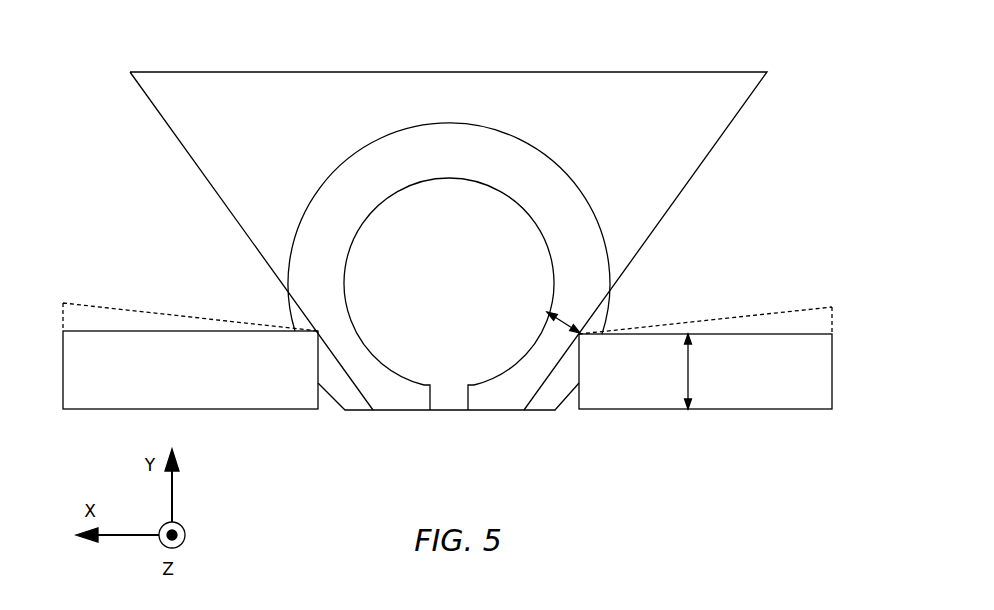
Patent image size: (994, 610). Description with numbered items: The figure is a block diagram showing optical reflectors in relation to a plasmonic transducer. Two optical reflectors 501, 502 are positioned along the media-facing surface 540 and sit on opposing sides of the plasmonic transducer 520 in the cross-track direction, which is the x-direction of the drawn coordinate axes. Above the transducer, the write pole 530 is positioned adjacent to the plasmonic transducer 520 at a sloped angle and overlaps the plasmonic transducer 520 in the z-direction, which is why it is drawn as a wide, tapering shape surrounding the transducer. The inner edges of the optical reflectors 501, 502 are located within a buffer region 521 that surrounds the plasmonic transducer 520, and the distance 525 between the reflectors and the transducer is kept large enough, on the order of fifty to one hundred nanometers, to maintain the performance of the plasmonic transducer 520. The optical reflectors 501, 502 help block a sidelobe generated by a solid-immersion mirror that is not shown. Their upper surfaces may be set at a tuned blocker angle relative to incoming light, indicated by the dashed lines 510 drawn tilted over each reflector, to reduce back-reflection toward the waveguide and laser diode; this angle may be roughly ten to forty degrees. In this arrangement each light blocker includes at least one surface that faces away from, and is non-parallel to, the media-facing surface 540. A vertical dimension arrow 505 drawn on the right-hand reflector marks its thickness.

The write pole 530 is at (666, 78).
The buffer region 521 is at (565, 178).
The plasmonic transducer 520 is at (449, 281).
The media-facing surface 540 is at (402, 412).
The optical reflector 501 is at (190, 370).
The optical reflector 502 is at (705, 371).
The dashed lines 510 is at (133, 311).
The distance 525 is at (575, 330).
The thickness 505 is at (692, 377).